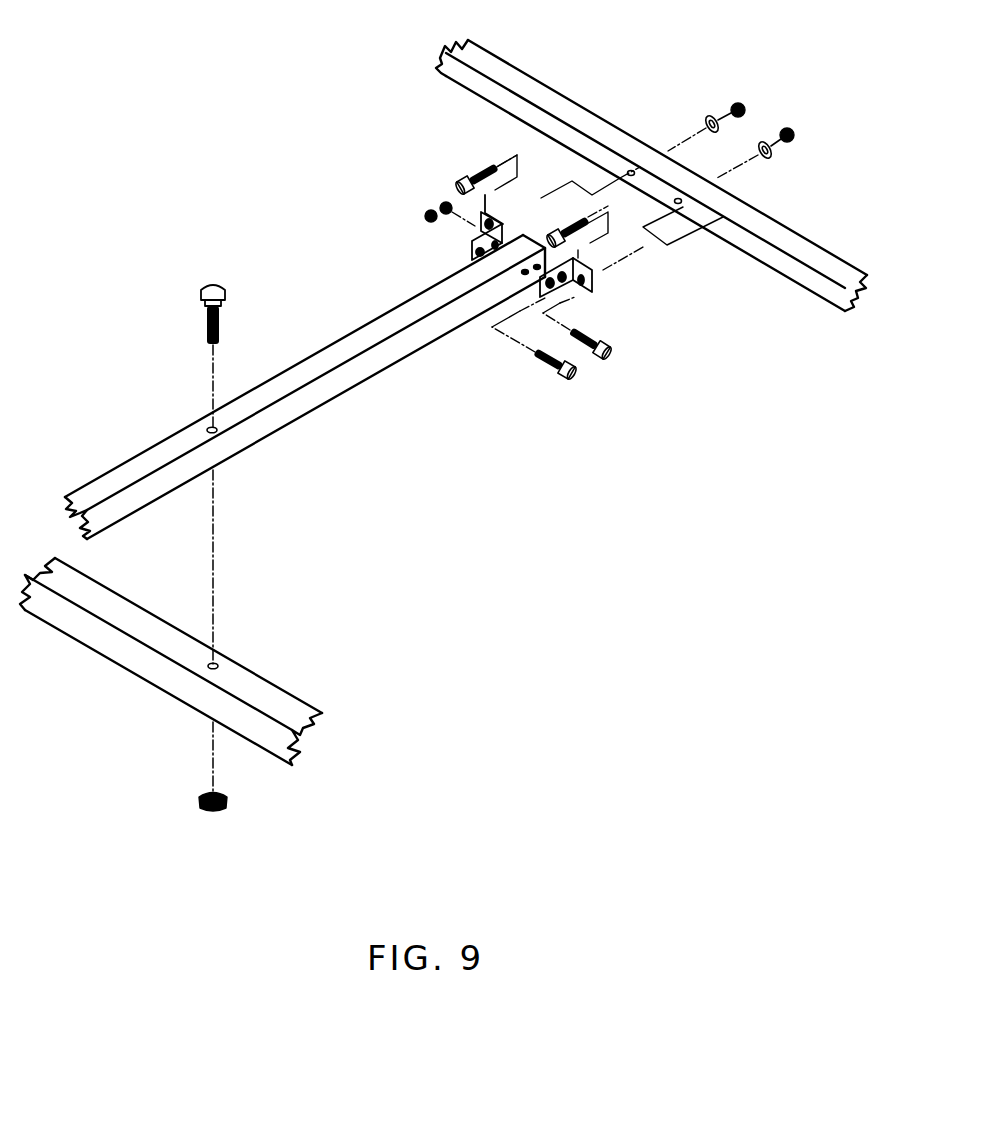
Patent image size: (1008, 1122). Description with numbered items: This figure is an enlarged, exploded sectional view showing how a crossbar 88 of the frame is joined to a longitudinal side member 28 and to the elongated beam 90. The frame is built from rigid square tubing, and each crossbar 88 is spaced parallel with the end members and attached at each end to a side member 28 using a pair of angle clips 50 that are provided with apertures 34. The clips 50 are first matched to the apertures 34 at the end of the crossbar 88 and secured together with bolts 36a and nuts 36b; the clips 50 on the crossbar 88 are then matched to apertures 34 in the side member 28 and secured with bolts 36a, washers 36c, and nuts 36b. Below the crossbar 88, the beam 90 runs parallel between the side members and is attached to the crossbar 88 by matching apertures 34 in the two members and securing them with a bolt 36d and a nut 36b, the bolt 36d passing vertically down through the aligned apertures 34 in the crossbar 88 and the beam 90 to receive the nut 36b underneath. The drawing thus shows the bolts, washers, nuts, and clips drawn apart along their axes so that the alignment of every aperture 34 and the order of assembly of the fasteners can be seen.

The side member 28 is at (545, 97).
The aperture 34 is at (212, 428).
The bolt 36a is at (457, 185).
The nut 36b is at (745, 100).
The washer 36c is at (706, 122).
The bolt 36d is at (210, 283).
The angle clip 50 is at (598, 287).
The crossbar 88 is at (150, 455).
The beam 90 is at (178, 638).